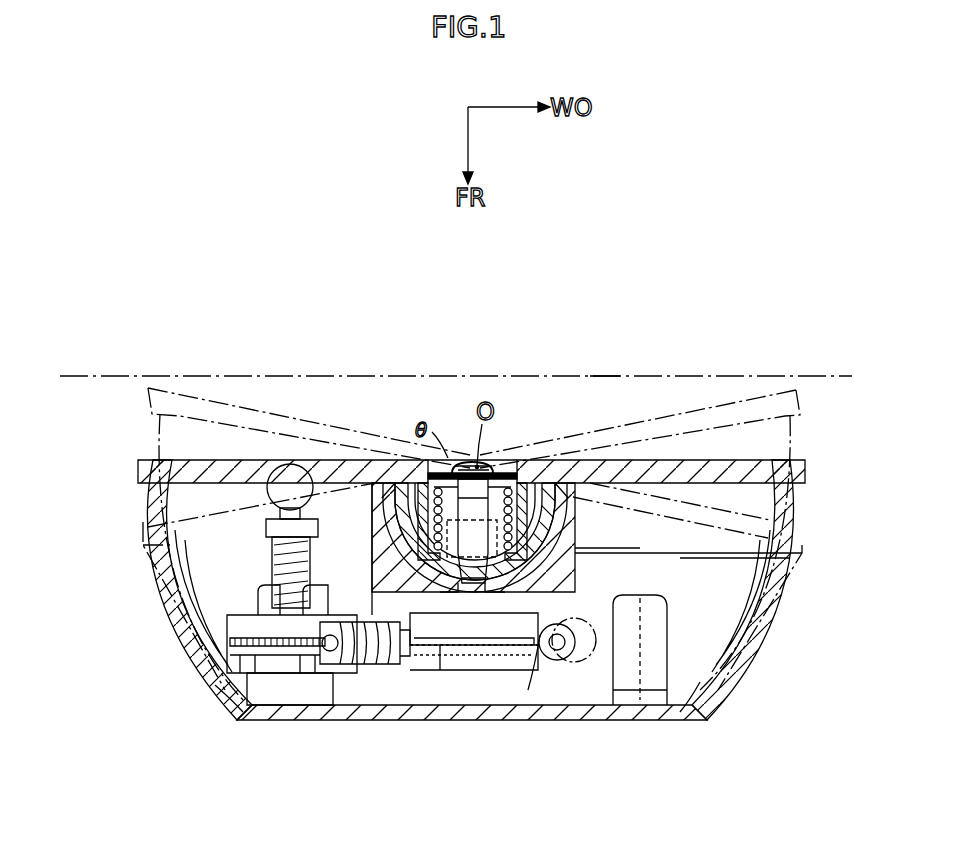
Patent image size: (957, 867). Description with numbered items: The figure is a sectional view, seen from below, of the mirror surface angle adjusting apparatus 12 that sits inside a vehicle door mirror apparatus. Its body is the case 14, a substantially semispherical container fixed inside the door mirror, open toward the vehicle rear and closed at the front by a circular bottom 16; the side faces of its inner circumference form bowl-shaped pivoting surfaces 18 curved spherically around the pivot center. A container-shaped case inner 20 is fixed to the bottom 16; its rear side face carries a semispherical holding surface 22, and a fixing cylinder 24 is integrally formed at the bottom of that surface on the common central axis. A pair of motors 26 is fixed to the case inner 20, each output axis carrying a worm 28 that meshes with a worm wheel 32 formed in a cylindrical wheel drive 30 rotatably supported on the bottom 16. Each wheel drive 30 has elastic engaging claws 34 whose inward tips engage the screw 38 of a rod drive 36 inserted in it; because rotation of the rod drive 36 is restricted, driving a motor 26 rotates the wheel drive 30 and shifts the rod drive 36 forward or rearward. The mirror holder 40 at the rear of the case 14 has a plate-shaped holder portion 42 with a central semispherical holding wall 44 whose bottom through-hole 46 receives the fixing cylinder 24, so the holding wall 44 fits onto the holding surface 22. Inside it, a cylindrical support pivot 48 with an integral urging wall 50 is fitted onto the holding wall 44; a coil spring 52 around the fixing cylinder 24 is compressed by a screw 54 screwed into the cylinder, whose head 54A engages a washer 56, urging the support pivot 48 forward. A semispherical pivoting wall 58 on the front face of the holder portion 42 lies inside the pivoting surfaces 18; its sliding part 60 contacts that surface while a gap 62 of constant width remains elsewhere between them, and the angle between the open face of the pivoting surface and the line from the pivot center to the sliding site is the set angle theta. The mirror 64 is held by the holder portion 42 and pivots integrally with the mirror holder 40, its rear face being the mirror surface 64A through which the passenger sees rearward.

The mirror surface angle adjusting apparatus 12 is at (212, 282).
The case 14 is at (234, 730).
The bottom 16 is at (388, 720).
The pivoting surfaces 18 is at (232, 695).
The case inner 20 is at (582, 566).
The holding surface 22 is at (583, 540).
The fixing cylinder 24 is at (548, 478).
The motors 26 is at (362, 700).
The worm 28 is at (348, 690).
The wheel drives 30 is at (283, 690).
The worm wheel 32 is at (228, 656).
The engaging claws 34 is at (226, 640).
The rod drive 36 is at (258, 490).
The screw 38 is at (268, 566).
The mirror holder 40 is at (230, 395).
The holder portion 42 is at (808, 472).
The holding wall 44 is at (390, 505).
The through-hole 46 is at (372, 556).
The support pivot 48 is at (420, 470).
The urging wall 50 is at (410, 525).
The coil spring 52 is at (566, 586).
The screw 54 is at (492, 495).
The head 54A is at (466, 465).
The washer 56 is at (522, 495).
The pivoting wall 58 is at (150, 507).
The sliding part 60 is at (190, 642).
The gap 62 is at (165, 582).
The mirror 64 is at (93, 376).
The mirror surface 64A is at (602, 376).